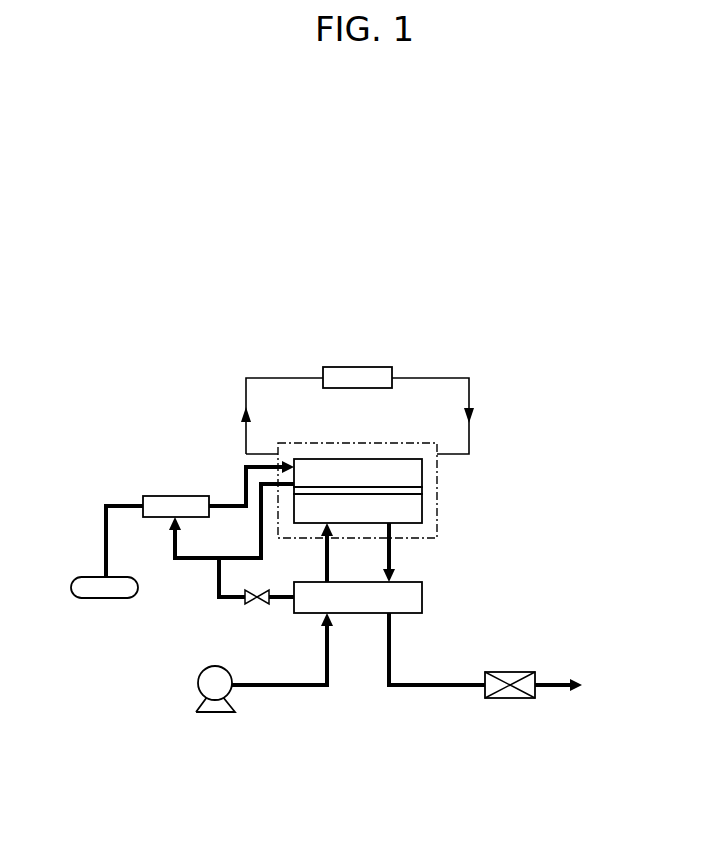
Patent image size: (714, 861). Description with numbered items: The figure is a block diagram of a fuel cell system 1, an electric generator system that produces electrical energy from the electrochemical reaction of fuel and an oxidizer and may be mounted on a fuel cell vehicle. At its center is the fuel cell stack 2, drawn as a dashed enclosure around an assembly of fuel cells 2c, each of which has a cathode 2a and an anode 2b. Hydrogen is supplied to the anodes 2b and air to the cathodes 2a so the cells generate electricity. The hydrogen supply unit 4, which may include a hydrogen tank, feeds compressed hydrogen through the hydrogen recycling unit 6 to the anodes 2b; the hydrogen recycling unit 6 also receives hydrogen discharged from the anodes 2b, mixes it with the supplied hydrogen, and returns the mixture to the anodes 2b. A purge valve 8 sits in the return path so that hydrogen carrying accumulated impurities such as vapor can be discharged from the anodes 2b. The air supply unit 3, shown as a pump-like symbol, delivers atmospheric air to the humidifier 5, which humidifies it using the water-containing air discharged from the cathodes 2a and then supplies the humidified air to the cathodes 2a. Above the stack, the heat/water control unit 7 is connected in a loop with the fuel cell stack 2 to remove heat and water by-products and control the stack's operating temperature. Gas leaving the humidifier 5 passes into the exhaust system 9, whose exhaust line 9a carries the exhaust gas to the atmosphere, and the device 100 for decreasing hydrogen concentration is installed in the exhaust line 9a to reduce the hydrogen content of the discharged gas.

The fuel cell system 1 is at (366, 268).
The fuel cell stack 2 is at (437, 531).
The cathode 2a is at (422, 505).
The anode 2b is at (422, 473).
The fuel cell 2c is at (514, 466).
The air supply unit 3 is at (214, 716).
The hydrogen supply unit 4 is at (98, 603).
The humidifier 5 is at (422, 596).
The hydrogen recycling unit 6 is at (175, 496).
The heat/water control unit 7 is at (355, 367).
The purge valve 8 is at (257, 605).
The exhaust system 9 is at (387, 691).
The exhaust line 9a is at (423, 687).
The device for decreasing hydrogen concentration 100 is at (508, 701).